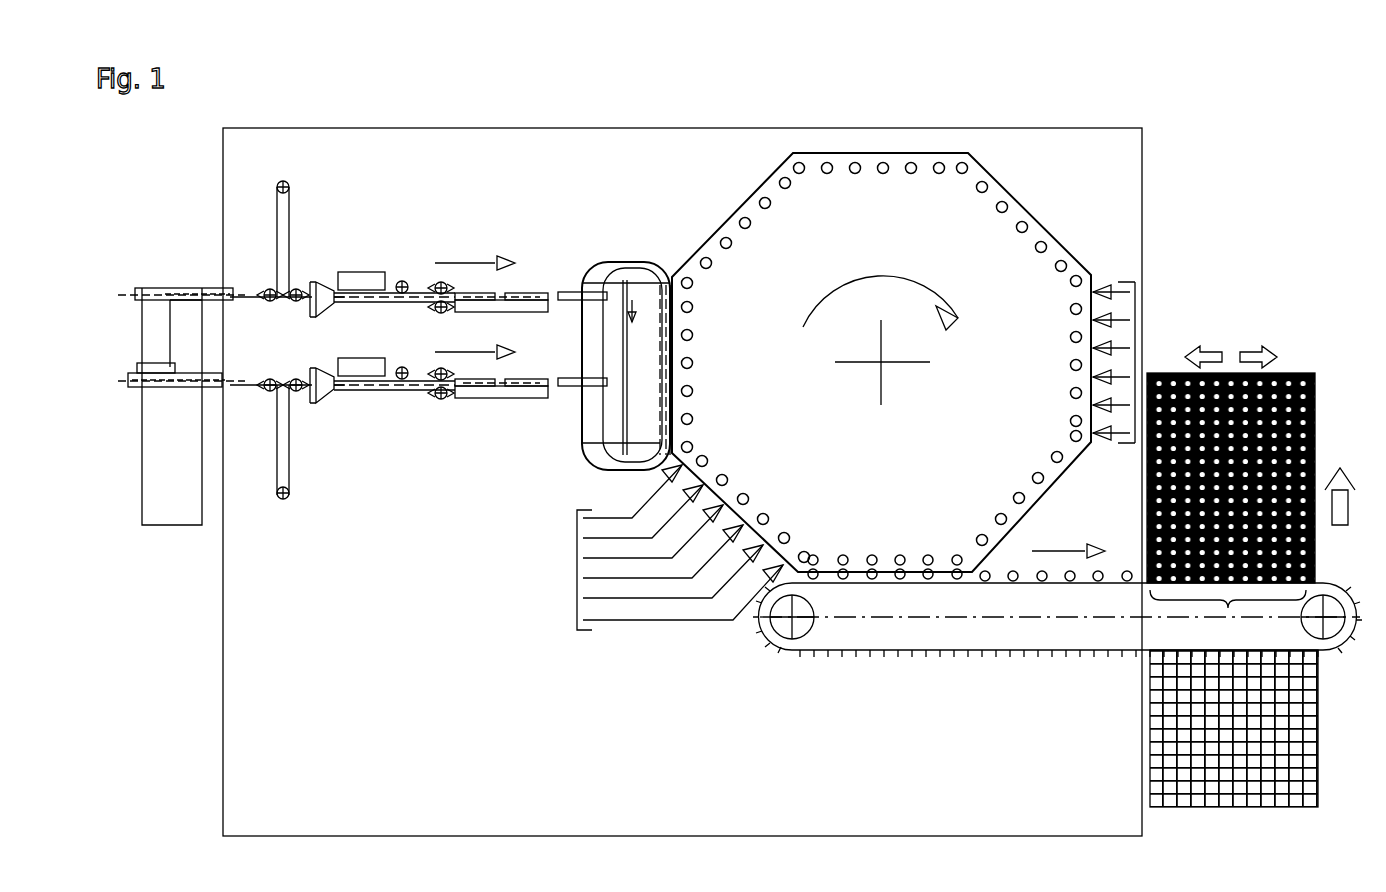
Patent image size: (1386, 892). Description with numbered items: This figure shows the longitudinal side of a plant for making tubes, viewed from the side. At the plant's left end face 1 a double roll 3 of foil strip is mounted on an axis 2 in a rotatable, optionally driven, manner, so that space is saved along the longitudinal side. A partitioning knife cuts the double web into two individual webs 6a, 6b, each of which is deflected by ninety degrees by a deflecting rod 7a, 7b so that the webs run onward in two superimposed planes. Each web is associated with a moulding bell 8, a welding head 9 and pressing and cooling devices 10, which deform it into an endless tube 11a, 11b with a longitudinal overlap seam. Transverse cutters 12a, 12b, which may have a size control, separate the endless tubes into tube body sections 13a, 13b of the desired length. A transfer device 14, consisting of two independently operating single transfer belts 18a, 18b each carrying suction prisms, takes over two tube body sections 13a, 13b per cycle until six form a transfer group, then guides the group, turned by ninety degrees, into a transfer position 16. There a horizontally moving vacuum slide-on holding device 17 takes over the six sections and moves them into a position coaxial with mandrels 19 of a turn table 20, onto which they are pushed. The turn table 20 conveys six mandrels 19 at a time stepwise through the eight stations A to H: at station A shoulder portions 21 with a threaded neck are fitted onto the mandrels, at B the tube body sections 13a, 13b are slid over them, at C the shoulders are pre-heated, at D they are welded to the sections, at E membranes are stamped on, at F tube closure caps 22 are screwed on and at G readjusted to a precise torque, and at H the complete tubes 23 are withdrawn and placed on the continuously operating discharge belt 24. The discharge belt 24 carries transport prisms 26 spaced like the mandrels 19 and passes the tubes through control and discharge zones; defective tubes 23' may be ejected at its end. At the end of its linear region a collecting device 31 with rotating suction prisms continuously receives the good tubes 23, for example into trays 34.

The left end face 1 is at (185, 687).
The axis 2 is at (212, 395).
The double roll 3 is at (186, 523).
The individual web 6a is at (160, 352).
The individual web 6b is at (148, 311).
The deflecting rod 7a is at (185, 287).
The deflecting rod 7b is at (126, 384).
The moulding bell 8 is at (318, 280).
The welding head 9 is at (362, 272).
The pressing and cooling devices 10 is at (404, 280).
The endless tube 11a is at (358, 304).
The endless tube 11b is at (358, 394).
The transverse cutter 12a is at (440, 282).
The transverse cutter 12b is at (436, 405).
The tube body section 13a is at (540, 292).
The tube body section 13b is at (541, 380).
The transfer device 14 is at (642, 272).
The transfer position 16 is at (668, 278).
The slide-on holding device 17 is at (674, 288).
The single transfer belt 18a is at (606, 428).
The single transfer belt 18b is at (614, 445).
The mandrel 19 is at (692, 440).
The turn table 20 is at (882, 385).
The shoulder portion 21 is at (580, 612).
The tube closure cap 22 is at (1130, 300).
The complete tube 23 is at (1068, 549).
The defective tube 23' is at (1352, 538).
The discharge belt 24 is at (1060, 602).
The transport prism 26 is at (1002, 650).
The collecting device 31 is at (1228, 614).
The tray 34 is at (1324, 406).